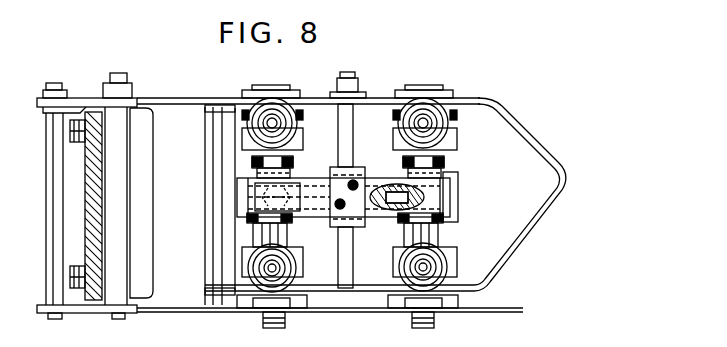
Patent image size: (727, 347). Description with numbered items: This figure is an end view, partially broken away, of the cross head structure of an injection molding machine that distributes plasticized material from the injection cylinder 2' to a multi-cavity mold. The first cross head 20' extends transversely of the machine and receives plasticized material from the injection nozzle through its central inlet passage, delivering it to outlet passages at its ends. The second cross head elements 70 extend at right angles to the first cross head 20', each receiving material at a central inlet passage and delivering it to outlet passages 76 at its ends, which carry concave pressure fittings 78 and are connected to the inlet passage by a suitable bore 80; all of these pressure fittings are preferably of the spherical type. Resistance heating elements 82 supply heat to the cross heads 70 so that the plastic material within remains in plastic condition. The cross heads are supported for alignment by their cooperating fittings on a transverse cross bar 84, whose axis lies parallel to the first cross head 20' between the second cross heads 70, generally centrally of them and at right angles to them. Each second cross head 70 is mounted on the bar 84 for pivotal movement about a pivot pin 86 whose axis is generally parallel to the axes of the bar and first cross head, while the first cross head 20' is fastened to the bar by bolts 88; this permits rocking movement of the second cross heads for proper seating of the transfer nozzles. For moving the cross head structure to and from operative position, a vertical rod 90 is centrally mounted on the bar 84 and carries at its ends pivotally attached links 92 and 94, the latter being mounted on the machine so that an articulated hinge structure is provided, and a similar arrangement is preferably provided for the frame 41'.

The injection cylinder 2' is at (370, 171).
The first cross head 20' is at (347, 177).
The frame 41' is at (401, 194).
The second cross head element 70 is at (449, 168).
The outlet passage 76 is at (262, 128).
The concave pressure fitting 78 is at (262, 118).
The bore 80 is at (456, 234).
The resistance heating element 82 is at (464, 152).
The transverse cross bar 84 is at (358, 168).
The pivot pin 86 is at (354, 190).
The bolt 88 is at (338, 207).
The vertical rod 90 is at (343, 80).
The link 92 is at (311, 98).
The link 94 is at (157, 98).